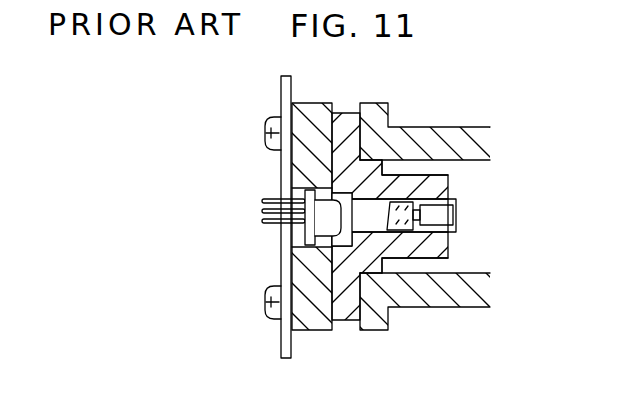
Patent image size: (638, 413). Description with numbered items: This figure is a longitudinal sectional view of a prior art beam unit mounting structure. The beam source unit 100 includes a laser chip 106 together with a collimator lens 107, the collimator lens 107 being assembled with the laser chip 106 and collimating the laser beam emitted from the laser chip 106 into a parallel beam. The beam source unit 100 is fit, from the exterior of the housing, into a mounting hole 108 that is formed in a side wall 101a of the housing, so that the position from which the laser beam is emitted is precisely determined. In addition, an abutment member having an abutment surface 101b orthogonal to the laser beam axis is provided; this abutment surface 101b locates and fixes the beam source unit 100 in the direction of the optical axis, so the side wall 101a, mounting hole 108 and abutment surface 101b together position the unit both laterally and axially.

The beam source unit 100 is at (276, 103).
The side wall 101a is at (413, 127).
The abutment surface 101b is at (362, 309).
The laser chip 106 is at (324, 224).
The collimator lens 107 is at (403, 231).
The mounting hole 108 is at (434, 172).